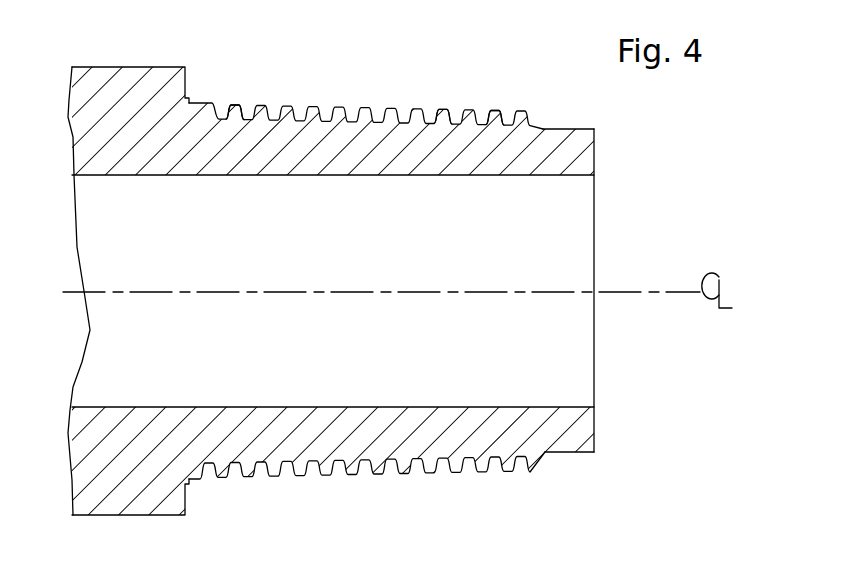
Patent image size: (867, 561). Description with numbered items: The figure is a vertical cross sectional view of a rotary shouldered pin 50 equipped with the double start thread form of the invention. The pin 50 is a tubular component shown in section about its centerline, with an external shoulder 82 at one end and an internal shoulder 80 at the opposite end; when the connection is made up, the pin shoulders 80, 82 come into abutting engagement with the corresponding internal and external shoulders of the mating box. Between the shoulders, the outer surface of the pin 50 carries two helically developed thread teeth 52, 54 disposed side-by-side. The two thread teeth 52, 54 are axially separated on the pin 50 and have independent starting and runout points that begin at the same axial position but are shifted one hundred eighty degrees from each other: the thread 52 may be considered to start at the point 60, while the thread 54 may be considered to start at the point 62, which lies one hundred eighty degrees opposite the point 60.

The pin 50 is at (660, 226).
The thread tooth 52 is at (260, 104).
The thread tooth 54 is at (237, 103).
The starting point of thread 52 60 is at (541, 128).
The starting point of thread 54 62 is at (537, 457).
The internal shoulder 80 is at (594, 156).
The external shoulder 82 is at (197, 72).